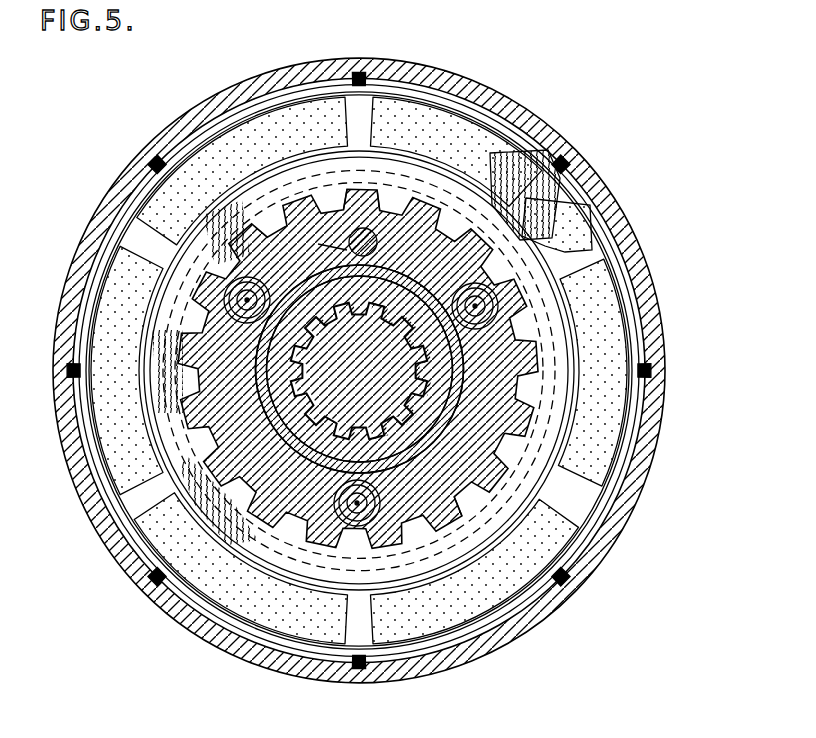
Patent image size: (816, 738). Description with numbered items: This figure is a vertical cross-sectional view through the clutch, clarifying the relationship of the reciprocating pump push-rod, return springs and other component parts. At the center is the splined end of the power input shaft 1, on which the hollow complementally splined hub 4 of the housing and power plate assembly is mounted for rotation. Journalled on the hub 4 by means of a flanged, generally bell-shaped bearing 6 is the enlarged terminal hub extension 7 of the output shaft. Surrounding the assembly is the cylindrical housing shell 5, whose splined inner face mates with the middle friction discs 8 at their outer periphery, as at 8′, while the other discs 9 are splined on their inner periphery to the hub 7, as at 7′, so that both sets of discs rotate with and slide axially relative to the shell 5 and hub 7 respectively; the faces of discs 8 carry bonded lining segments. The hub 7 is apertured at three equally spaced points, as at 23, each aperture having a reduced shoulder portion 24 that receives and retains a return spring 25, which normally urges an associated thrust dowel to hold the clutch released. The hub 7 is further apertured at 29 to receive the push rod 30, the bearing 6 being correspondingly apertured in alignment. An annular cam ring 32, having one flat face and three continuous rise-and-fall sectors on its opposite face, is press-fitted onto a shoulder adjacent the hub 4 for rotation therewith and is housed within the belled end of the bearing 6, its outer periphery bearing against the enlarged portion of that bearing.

The power input shaft 1 is at (361, 371).
The splined hub 4 is at (435, 372).
The cylindrical housing shell 5 is at (66, 437).
The bearing 6 is at (258, 368).
The hub extension 7 is at (405, 265).
The inner splines 7′ is at (342, 200).
The friction discs 8 is at (142, 192).
The outer splines 8′ is at (364, 80).
The friction discs 9 is at (372, 360).
The apertures 23 is at (250, 298).
The reduced shoulder portion 24 is at (486, 310).
The return springs 25 is at (240, 300).
The aperture 29 is at (347, 250).
The push rod 30 is at (372, 238).
The annular cam ring 32 is at (457, 492).